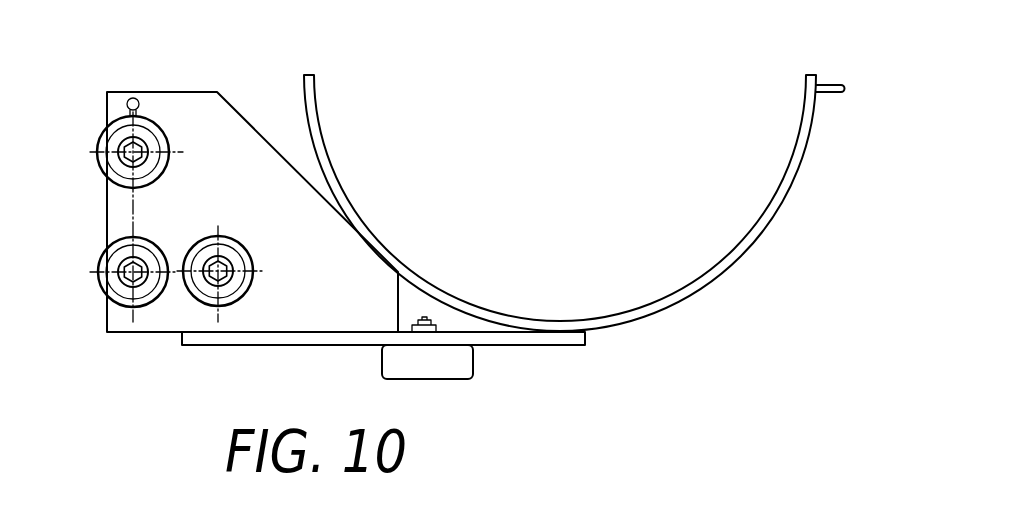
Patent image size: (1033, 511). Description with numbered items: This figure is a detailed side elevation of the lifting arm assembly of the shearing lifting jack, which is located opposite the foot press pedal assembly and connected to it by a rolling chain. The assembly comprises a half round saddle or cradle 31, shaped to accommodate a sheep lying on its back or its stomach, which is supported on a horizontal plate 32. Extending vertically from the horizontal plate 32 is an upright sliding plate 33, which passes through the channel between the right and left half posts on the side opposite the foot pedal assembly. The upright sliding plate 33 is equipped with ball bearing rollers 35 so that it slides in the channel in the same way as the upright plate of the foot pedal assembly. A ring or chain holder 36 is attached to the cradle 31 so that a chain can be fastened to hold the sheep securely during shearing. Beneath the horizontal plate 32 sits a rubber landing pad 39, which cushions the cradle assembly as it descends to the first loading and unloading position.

The half round saddle or cradle 31 is at (729, 265).
The horizontal plate 32 is at (210, 337).
The upright sliding plate 33 is at (218, 121).
The ball bearing rollers 35 is at (100, 167).
The ring or chain holder 36 is at (838, 88).
The rubber landing pad 39 is at (464, 372).